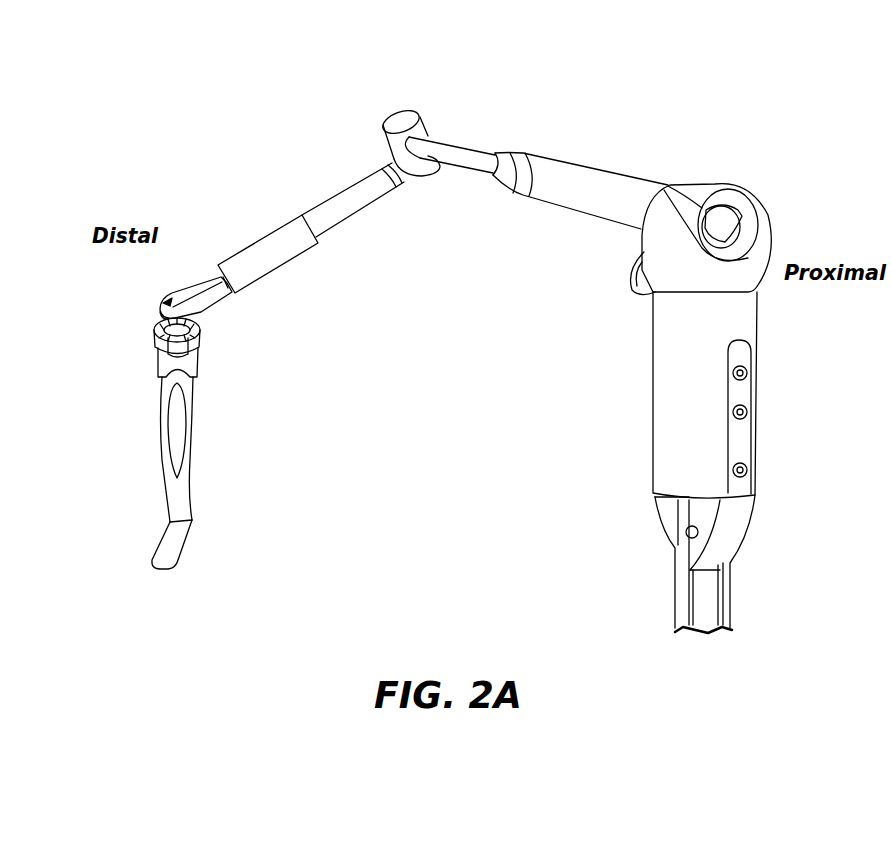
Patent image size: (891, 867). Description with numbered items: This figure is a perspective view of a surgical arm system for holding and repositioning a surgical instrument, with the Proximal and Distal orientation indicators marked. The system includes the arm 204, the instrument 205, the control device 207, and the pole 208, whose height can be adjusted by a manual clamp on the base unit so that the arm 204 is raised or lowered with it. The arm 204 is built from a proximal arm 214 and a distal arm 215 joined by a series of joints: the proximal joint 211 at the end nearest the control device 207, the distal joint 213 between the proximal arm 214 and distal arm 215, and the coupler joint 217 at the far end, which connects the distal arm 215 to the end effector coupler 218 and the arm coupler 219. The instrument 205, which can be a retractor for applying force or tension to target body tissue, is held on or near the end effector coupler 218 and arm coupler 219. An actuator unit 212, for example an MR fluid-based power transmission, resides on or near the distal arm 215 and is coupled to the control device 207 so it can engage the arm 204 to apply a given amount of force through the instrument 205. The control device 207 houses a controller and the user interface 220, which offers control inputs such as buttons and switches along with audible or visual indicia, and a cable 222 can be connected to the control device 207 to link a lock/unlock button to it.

The arm 204 is at (556, 116).
The instrument 205 is at (193, 489).
The control device 207 is at (768, 411).
The pole 208 is at (704, 591).
The proximal joint 211 is at (751, 180).
The actuator unit 212 is at (586, 186).
The distal joint 213 is at (428, 108).
The proximal arm 214 is at (472, 165).
The distal arm 215 is at (344, 205).
The coupler joint 217 is at (181, 272).
The end effector coupler 218 is at (196, 354).
The arm coupler 219 is at (160, 322).
The user interface 220 is at (742, 352).
The cable 222 is at (264, 240).